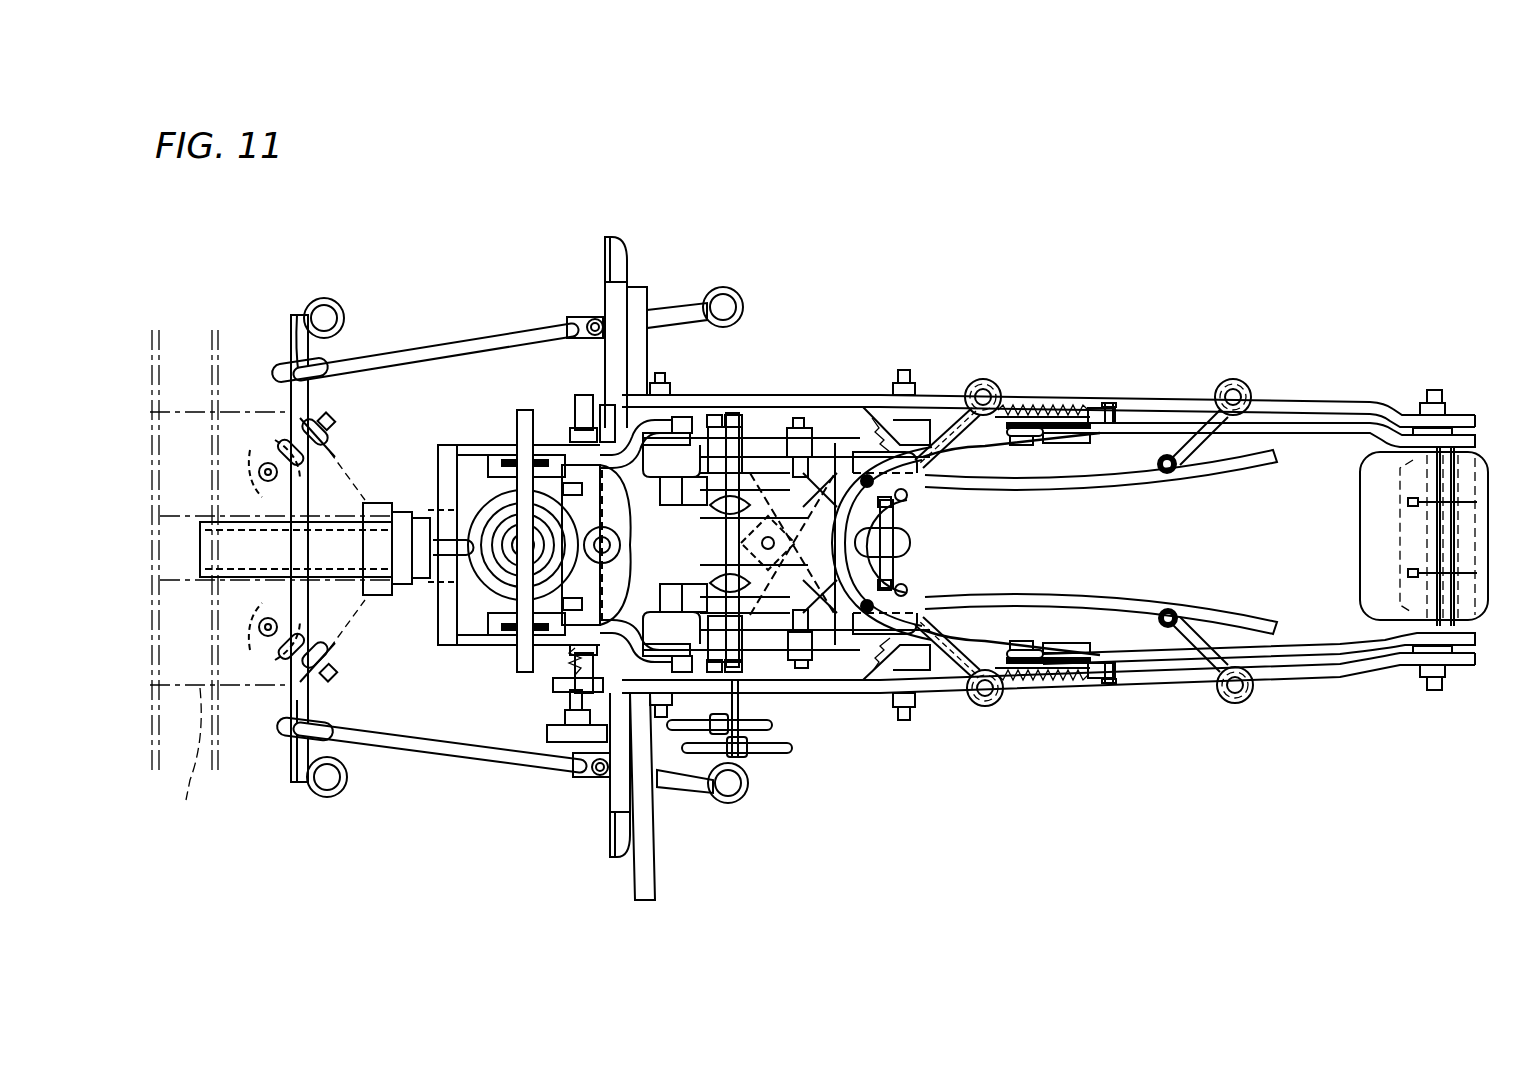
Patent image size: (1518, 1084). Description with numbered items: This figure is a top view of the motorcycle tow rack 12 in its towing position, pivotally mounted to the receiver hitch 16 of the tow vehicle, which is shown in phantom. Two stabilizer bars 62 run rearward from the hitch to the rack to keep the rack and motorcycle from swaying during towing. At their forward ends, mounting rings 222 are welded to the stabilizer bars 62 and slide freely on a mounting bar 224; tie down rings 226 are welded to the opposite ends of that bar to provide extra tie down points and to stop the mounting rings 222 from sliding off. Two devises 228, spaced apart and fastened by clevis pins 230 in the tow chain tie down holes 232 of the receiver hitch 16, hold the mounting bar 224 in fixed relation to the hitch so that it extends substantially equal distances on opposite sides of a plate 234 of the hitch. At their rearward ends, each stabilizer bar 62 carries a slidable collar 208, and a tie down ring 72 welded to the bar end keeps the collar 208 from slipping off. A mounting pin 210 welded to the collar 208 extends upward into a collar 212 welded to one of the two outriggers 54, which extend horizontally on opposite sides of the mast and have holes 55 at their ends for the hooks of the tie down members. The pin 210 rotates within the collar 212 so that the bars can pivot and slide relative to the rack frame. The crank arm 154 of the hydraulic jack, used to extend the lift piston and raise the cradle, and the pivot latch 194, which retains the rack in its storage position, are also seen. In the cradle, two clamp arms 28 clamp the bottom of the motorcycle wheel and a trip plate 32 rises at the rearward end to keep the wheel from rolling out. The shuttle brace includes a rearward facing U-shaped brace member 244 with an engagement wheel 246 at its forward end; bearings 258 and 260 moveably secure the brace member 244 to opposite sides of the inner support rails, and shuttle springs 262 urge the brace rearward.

The motorcycle tow rack 12 is at (566, 274).
The receiver hitch 16 is at (271, 583).
The clamp arms 28 is at (1200, 478).
The trip plate 32 is at (1368, 528).
The outriggers 54 is at (615, 237).
The holes 55 is at (628, 265).
The stabilizer bars 62 is at (398, 350).
The tie down ring 72 is at (718, 288).
The crank arm 154 is at (654, 880).
The pivot latch 194 is at (548, 735).
The collar 208 is at (578, 772).
The mounting pin 210 is at (592, 777).
The collar 212 is at (604, 778).
The mounting rings 222 is at (300, 330).
The mounting bar 224 is at (297, 772).
The tie down rings 226 is at (322, 297).
The devises 228 is at (330, 440).
The clevis pins 230 is at (330, 418).
The tow chain tie down holes 232 is at (260, 433).
The plate 234 is at (347, 468).
The brace member 244 is at (960, 450).
The engagement wheel 246 is at (908, 543).
The bearings 258 is at (1023, 443).
The bearings 260 is at (1073, 444).
The shuttle springs 262 is at (1043, 398).